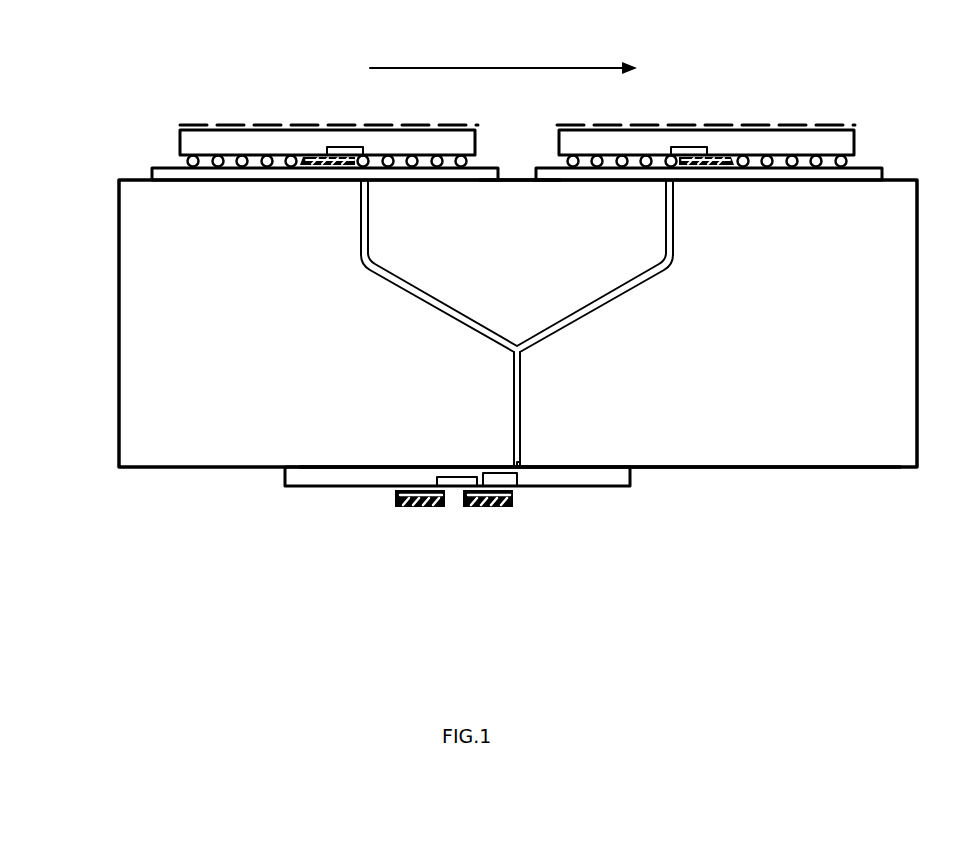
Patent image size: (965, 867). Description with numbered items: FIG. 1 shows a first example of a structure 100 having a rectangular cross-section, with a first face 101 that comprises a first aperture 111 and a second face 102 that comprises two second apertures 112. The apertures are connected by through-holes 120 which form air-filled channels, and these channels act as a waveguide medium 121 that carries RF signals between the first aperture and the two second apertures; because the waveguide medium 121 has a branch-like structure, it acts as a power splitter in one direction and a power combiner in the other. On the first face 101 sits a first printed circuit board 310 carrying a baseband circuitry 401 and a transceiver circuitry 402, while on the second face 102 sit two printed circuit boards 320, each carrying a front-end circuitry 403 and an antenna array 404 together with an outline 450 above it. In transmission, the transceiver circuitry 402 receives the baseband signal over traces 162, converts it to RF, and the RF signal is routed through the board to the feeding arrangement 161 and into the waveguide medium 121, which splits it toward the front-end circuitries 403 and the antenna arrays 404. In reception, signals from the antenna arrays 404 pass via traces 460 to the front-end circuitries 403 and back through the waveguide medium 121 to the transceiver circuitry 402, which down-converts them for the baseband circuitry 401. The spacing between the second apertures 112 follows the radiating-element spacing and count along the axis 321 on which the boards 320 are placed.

The structure 100 is at (118, 322).
The first face 101 is at (744, 474).
The second face 102 is at (521, 140).
The first aperture 111 is at (525, 455).
The second apertures 112 is at (369, 186).
The through-holes 120 is at (522, 423).
The waveguide medium 121 is at (679, 244).
The feeding arrangement 161 is at (508, 471).
The traces 162 is at (445, 477).
The first printed circuit board 310 is at (284, 475).
The printed circuit boards 320 is at (152, 175).
The axis 321 is at (470, 68).
The baseband circuitry 401 is at (422, 509).
The transceiver circuitry 402 is at (472, 509).
The front-end circuitry 403 is at (304, 157).
The antenna array 404 is at (178, 144).
The chip outline 450 is at (217, 124).
The traces 460 is at (362, 128).